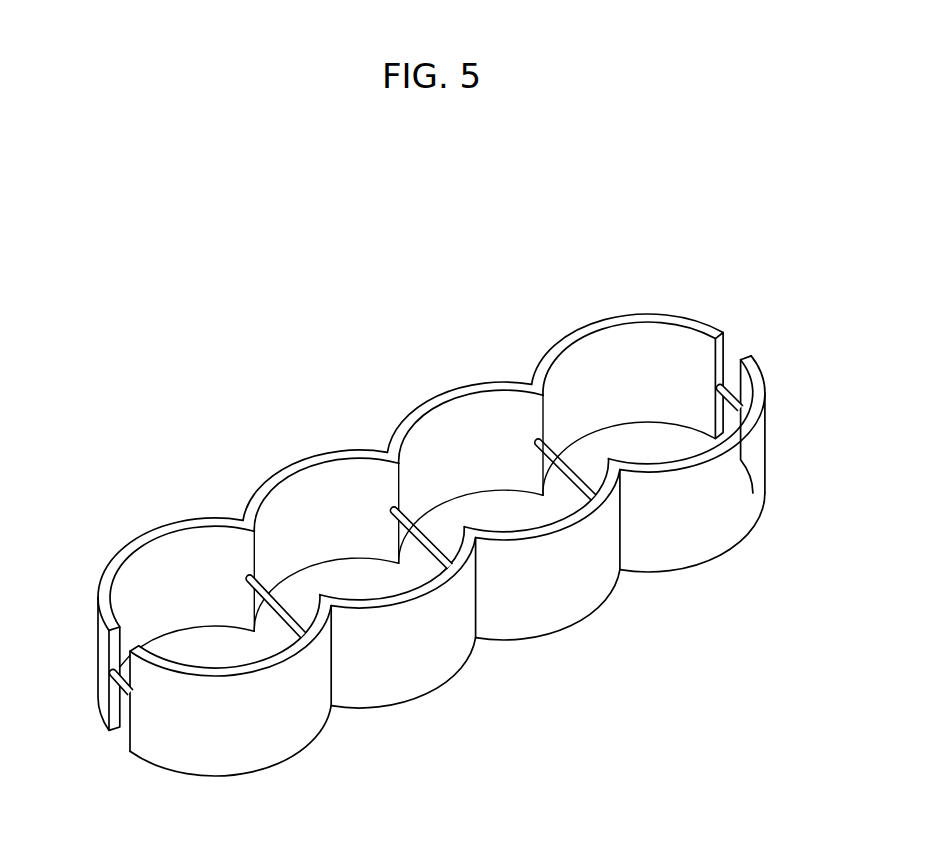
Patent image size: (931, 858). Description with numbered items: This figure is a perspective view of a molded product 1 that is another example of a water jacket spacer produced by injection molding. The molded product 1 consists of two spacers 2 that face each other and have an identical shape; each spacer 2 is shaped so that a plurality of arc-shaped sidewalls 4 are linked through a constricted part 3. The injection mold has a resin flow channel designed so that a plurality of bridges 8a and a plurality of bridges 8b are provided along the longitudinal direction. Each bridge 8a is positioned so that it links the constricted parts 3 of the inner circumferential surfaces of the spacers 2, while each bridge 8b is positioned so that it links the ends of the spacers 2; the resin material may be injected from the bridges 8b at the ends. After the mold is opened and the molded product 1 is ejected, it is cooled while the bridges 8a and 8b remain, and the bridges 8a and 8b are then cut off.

The molded product 1 is at (435, 488).
The spacer 2 is at (445, 395).
The constricted part 3 is at (533, 384).
The arc-shaped sidewall 4 is at (305, 462).
The bridge 8a is at (280, 617).
The bridge 8b is at (100, 740).